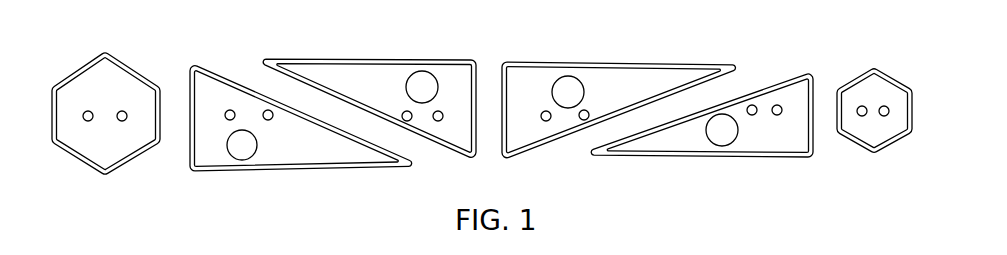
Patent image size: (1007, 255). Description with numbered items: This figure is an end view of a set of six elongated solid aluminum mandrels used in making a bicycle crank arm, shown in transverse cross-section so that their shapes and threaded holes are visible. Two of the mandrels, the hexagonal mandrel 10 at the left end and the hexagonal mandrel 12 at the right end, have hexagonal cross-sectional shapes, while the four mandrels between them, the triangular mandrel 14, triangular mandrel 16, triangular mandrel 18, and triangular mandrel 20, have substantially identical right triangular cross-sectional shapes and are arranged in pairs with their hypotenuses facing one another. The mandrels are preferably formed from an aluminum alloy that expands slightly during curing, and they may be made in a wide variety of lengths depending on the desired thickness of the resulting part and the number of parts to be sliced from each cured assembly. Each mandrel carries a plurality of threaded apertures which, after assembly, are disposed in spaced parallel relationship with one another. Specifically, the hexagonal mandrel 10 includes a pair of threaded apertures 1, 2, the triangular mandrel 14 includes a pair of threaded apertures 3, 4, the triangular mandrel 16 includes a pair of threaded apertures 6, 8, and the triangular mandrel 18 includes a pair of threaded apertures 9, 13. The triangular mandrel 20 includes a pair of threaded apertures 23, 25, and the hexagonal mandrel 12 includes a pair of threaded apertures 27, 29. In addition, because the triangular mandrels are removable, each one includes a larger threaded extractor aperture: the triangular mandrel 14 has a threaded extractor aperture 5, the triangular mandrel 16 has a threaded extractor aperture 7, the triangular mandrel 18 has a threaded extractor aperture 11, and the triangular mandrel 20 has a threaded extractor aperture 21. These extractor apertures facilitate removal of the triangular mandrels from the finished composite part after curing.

The threaded aperture 1 is at (88, 121).
The threaded aperture 2 is at (123, 121).
The threaded aperture 3 is at (229, 120).
The threaded aperture 4 is at (270, 120).
The threaded extractor aperture 5 is at (243, 160).
The threaded aperture 6 is at (403, 112).
The threaded extractor aperture 7 is at (436, 75).
The threaded aperture 8 is at (438, 121).
The threaded aperture 9 is at (541, 114).
The hexagonal mandrel 10 is at (78, 73).
The threaded extractor aperture 11 is at (579, 80).
The hexagonal mandrel 12 is at (859, 142).
The threaded aperture 13 is at (591, 113).
The triangular mandrel 14 is at (342, 171).
The triangular mandrel 16 is at (452, 153).
The triangular mandrel 18 is at (543, 153).
The triangular mandrel 20 is at (735, 158).
The threaded extractor aperture 21 is at (713, 143).
The threaded aperture 23 is at (753, 104).
The threaded aperture 25 is at (780, 105).
The threaded aperture 27 is at (862, 106).
The threaded aperture 29 is at (886, 106).